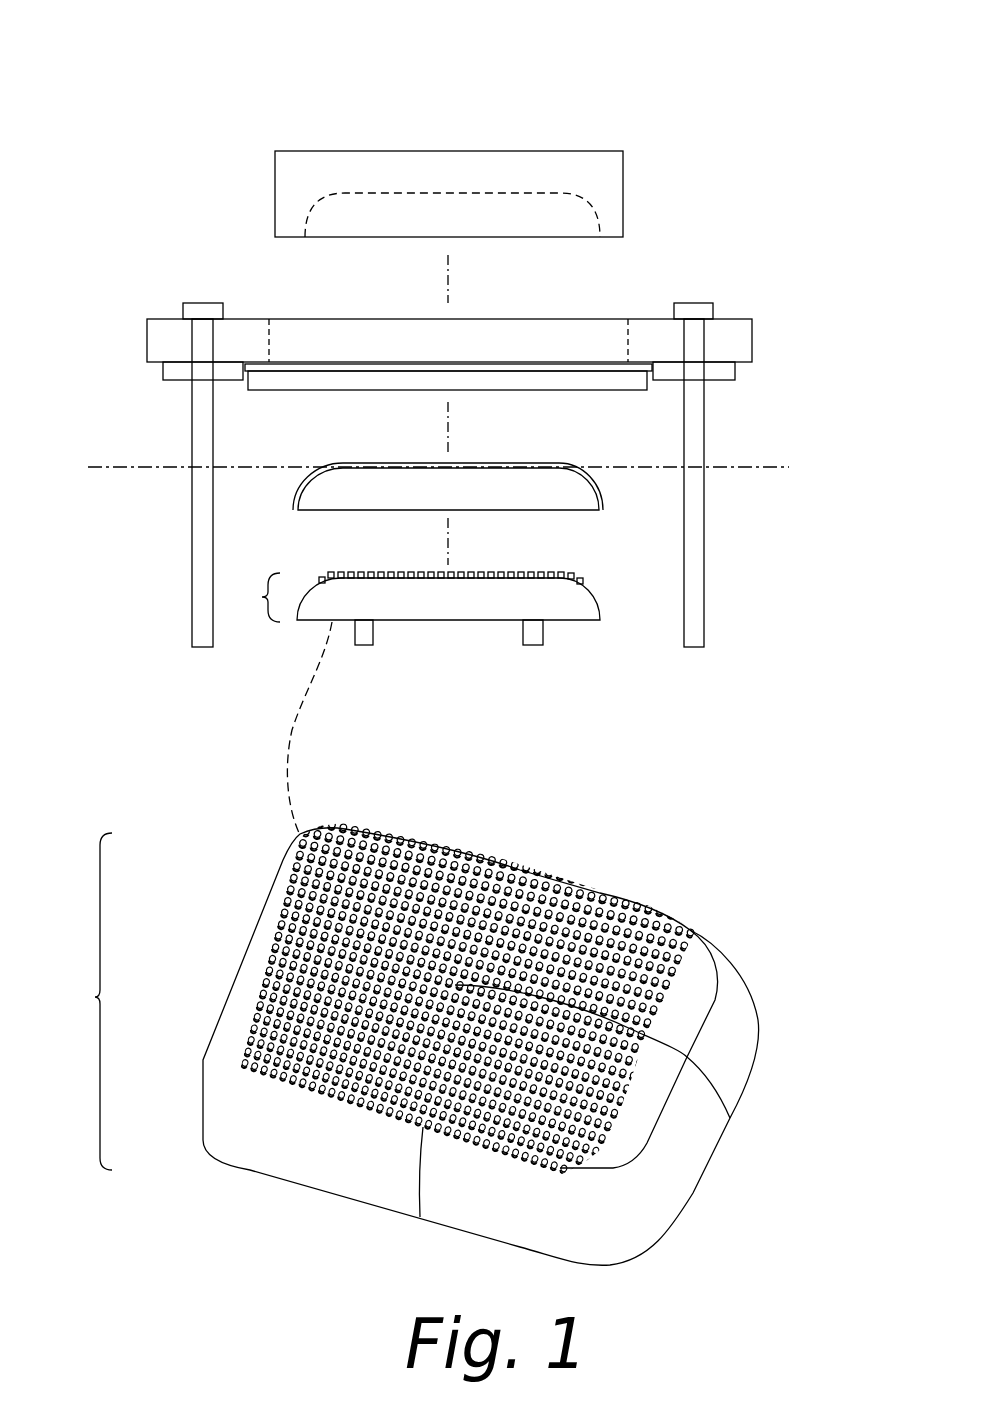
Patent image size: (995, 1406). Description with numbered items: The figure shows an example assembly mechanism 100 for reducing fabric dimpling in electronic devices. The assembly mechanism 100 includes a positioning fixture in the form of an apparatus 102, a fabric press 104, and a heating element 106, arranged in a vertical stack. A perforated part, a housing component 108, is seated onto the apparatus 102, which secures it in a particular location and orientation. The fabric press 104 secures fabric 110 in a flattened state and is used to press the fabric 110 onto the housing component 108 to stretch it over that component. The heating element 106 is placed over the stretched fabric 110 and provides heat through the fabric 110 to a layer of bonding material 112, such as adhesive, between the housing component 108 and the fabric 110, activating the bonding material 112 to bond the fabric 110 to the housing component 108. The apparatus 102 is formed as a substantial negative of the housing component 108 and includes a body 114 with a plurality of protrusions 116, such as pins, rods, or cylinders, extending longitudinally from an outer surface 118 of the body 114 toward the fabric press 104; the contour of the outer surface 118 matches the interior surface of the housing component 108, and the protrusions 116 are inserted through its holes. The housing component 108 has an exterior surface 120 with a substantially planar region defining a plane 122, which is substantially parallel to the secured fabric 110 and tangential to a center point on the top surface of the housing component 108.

The assembly mechanism 100 is at (141, 39).
The apparatus 102 is at (262, 597).
The fabric press 104 is at (147, 343).
The heating element 106 is at (275, 193).
The housing component 108 is at (298, 512).
The fabric 110 is at (353, 363).
The bonding material 112 is at (348, 462).
The body 114 is at (591, 602).
The protrusions 116 is at (560, 575).
The outer surface 118 is at (700, 958).
The exterior surface 120 is at (539, 458).
The plane 122 is at (783, 466).